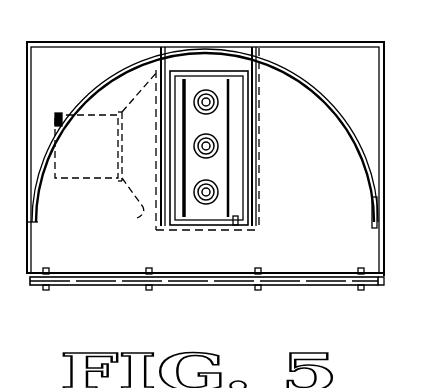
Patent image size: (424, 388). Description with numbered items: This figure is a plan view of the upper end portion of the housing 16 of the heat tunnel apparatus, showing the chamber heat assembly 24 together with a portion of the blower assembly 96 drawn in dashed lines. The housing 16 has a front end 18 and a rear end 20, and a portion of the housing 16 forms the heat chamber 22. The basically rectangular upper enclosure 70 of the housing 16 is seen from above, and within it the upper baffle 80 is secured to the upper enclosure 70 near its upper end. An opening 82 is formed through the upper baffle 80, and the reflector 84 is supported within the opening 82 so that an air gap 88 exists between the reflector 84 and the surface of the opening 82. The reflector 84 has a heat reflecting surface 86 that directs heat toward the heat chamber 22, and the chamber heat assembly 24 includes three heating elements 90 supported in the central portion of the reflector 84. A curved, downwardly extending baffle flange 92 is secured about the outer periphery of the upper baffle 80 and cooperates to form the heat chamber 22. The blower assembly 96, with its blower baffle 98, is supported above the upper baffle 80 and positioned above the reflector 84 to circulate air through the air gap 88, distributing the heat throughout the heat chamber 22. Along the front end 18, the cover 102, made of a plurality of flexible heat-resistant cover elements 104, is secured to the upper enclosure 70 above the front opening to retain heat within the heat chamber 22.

The housing 16 is at (336, 42).
The front end 18 is at (383, 283).
The rear end 20 is at (49, 40).
The heat chamber 22 is at (345, 236).
The chamber heat assembly 24 is at (208, 77).
The upper enclosure 70 is at (386, 61).
The upper baffle 80 is at (357, 205).
The opening 82 is at (239, 224).
The reflector 84 is at (236, 130).
The heat reflecting surface 86 is at (183, 222).
The air gap 88 is at (254, 190).
The heating elements 90 is at (214, 105).
The baffle flange 92 is at (112, 74).
The blower assembly 96 is at (62, 110).
The blower baffle 98 is at (137, 218).
The cover 102 is at (211, 288).
The cover elements 104 is at (92, 286).